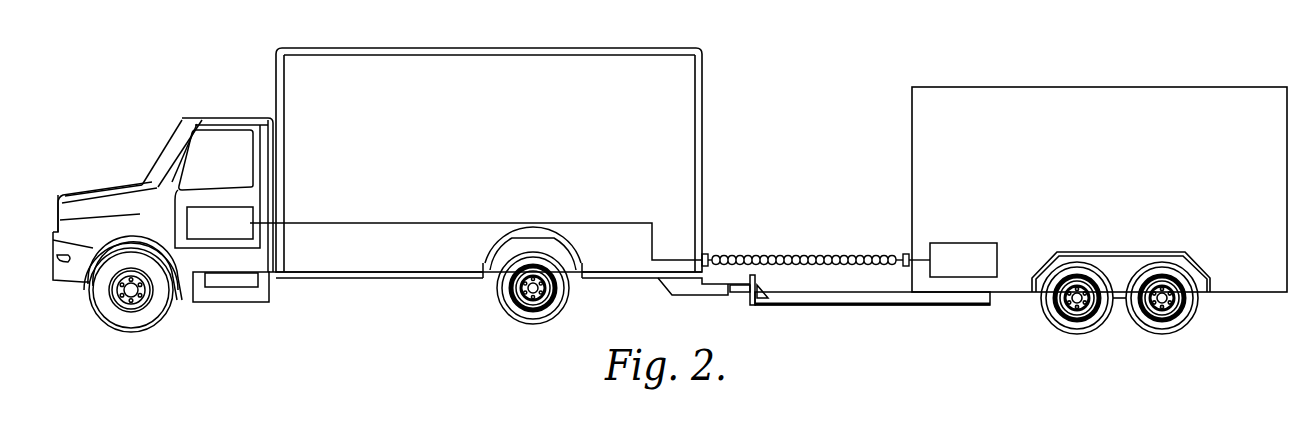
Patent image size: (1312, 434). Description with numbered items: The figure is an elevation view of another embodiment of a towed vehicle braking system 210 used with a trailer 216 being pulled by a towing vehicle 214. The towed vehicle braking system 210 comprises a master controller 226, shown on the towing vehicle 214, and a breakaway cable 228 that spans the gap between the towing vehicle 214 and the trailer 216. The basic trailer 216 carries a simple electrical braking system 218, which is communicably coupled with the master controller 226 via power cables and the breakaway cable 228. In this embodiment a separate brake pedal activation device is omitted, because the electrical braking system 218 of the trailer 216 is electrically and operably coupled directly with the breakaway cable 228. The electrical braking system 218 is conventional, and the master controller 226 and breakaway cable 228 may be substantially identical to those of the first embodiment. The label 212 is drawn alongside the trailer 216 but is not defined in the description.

The towed vehicle braking system 210 is at (818, 74).
The trailer 212 is at (1099, 181).
The towing vehicle 214 is at (447, 48).
The trailer 216 is at (1099, 210).
The electrical braking system 218 is at (950, 243).
The master controller 226 is at (238, 215).
The breakaway cable 228 is at (793, 255).